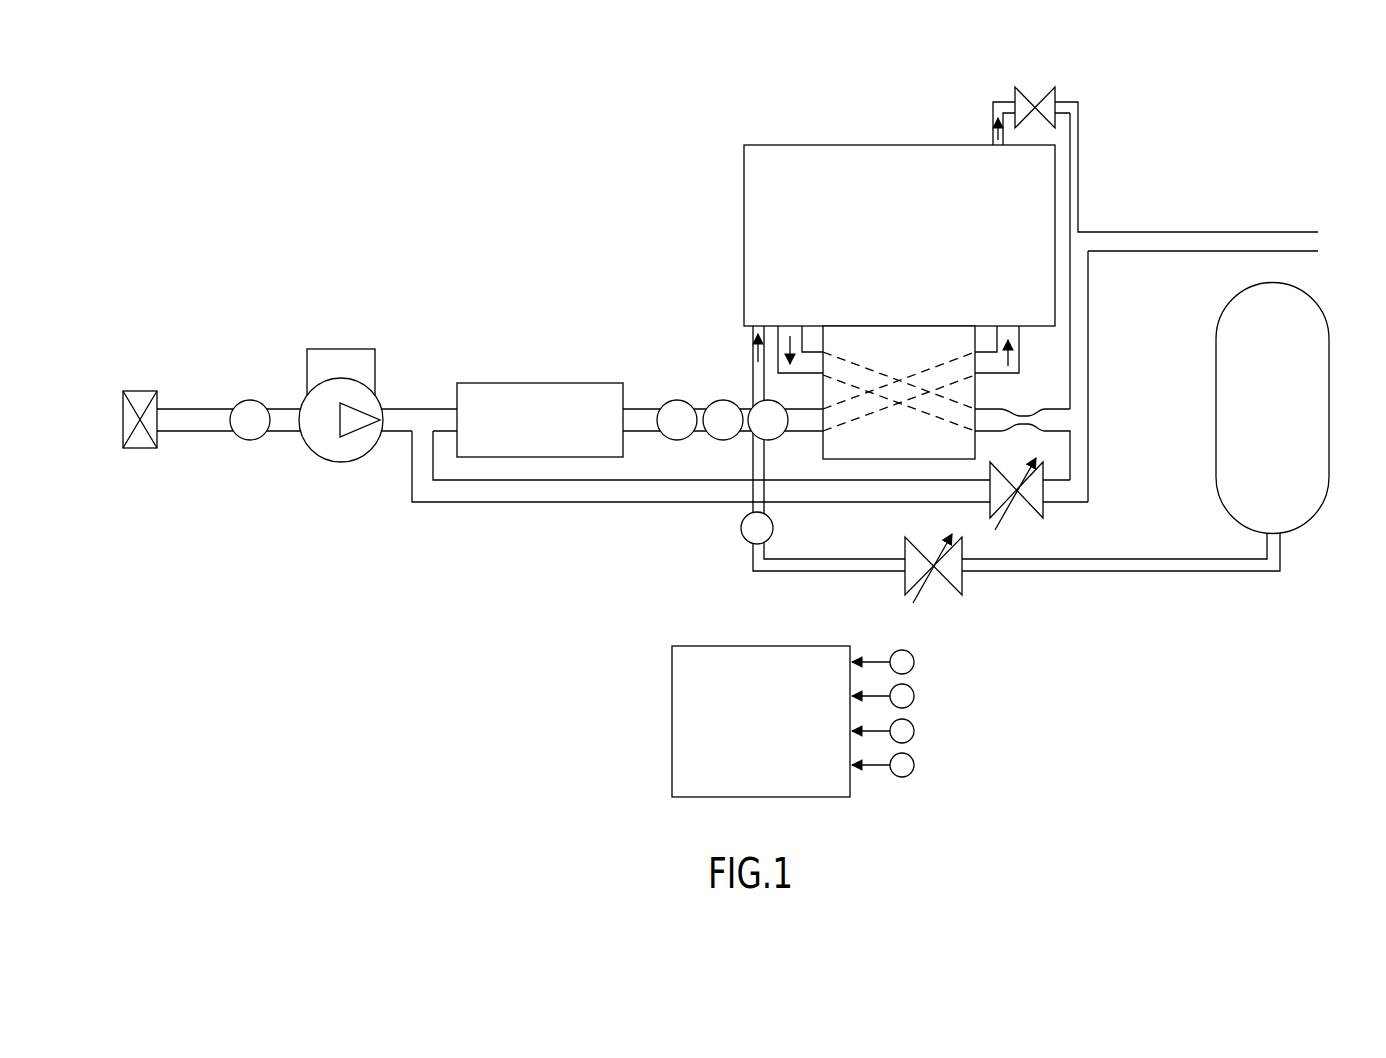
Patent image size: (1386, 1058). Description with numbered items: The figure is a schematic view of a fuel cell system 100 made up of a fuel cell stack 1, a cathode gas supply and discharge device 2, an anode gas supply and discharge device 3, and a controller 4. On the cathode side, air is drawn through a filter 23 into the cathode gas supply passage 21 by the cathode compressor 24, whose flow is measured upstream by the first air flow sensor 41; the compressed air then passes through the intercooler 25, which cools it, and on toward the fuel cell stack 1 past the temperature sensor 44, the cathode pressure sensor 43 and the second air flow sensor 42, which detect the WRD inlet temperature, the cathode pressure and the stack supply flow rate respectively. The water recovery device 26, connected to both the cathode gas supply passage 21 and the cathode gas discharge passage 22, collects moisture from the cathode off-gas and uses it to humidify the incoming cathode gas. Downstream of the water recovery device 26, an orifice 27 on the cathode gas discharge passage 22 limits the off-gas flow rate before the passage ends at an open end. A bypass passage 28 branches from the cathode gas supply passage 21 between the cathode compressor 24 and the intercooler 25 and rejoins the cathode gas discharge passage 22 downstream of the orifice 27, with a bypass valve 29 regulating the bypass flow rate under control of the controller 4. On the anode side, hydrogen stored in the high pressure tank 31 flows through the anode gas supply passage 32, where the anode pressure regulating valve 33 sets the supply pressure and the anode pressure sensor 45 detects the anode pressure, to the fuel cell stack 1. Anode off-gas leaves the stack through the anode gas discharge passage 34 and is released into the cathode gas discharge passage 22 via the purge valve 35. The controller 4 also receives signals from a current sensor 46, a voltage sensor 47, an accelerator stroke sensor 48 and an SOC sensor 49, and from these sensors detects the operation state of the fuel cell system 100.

The fuel cell system 100 is at (287, 150).
The fuel cell stack 1 is at (872, 145).
The cathode gas supply and discharge device 2 is at (263, 323).
The anode gas supply and discharge device 3 is at (1198, 596).
The controller 4 is at (672, 688).
The cathode gas supply passage 21 is at (198, 409).
The cathode gas discharge passage 22 is at (803, 374).
The filter 23 is at (138, 448).
The cathode compressor 24 is at (341, 462).
The intercooler 25 is at (582, 383).
The water recovery device (WRD) 26 is at (823, 456).
The orifice 27 is at (1025, 432).
The bypass passage 28 is at (665, 502).
The bypass valve 29 is at (1045, 510).
The high pressure tank 31 is at (1330, 318).
The anode gas supply passage 32 is at (1098, 573).
The anode pressure regulating valve 33 is at (965, 582).
The anode gas discharge passage 34 is at (1078, 130).
The purge valve 35 is at (1015, 95).
The first air flow sensor 41 is at (248, 440).
The second air flow sensor 42 is at (768, 400).
The cathode pressure sensor 43 is at (722, 400).
The temperature sensor 44 is at (677, 400).
The anode pressure sensor 45 is at (774, 528).
The current sensor 46 is at (914, 662).
The voltage sensor 47 is at (914, 696).
The accelerator stroke sensor 48 is at (914, 731).
The SOC sensor 49 is at (914, 765).